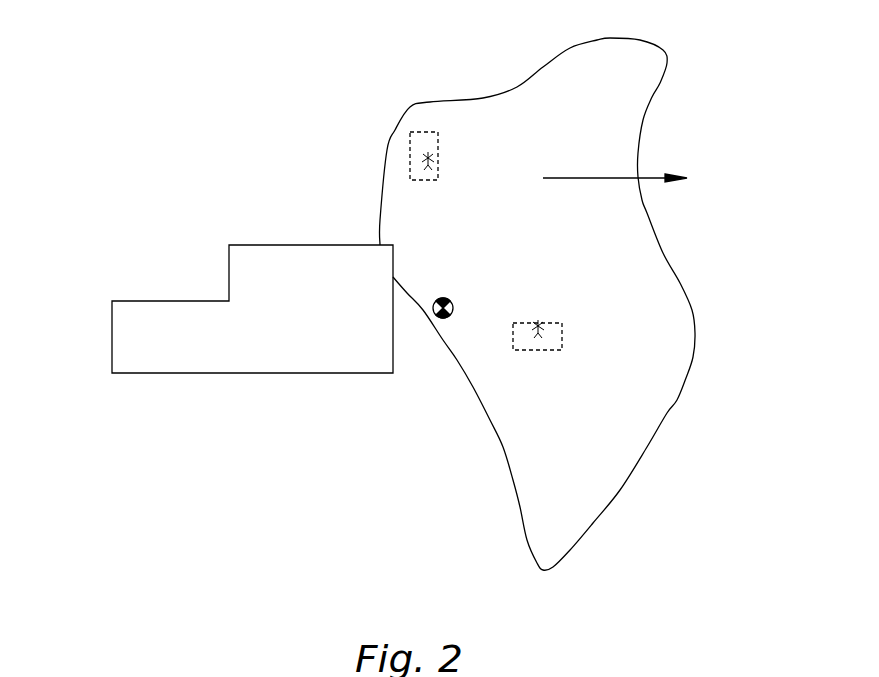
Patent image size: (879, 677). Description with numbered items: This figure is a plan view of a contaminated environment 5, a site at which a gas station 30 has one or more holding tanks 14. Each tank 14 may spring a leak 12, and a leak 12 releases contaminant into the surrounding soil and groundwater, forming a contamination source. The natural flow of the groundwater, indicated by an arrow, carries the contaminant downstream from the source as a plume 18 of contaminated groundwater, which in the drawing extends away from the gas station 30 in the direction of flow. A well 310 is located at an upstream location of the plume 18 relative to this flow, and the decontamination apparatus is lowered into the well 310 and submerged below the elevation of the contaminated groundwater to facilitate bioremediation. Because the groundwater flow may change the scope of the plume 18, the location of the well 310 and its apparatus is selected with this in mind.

The contaminated environment 5 is at (148, 146).
The leak 12 is at (438, 157).
The holding tank 14 is at (410, 156).
The plume 18 is at (680, 333).
The gas station 30 is at (112, 338).
The well 310 is at (443, 318).